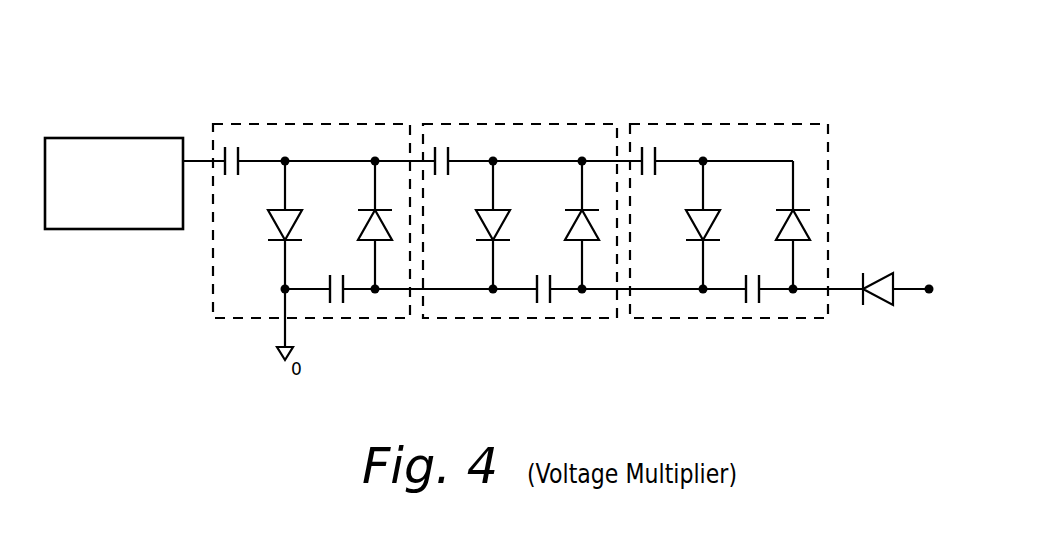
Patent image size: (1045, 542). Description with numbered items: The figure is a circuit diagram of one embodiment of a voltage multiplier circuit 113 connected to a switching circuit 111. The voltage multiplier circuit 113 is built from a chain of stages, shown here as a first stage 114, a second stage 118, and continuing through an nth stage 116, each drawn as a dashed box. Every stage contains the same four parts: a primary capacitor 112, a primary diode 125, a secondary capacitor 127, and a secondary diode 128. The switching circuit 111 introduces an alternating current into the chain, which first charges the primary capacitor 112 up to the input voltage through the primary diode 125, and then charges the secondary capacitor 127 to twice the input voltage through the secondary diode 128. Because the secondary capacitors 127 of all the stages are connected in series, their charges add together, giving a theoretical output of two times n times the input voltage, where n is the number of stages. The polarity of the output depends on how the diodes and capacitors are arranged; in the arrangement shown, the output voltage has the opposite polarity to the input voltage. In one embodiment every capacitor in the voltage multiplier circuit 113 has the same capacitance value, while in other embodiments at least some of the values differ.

The switching circuit 111 is at (117, 137).
The primary capacitor 112 is at (230, 143).
The voltage multiplier circuit 113 is at (520, 164).
The first stage 114 is at (305, 123).
The nth stage 116 is at (765, 123).
The second stage 118 is at (513, 123).
The primary diode 125 is at (268, 233).
The secondary capacitor 127 is at (333, 312).
The secondary diode 128 is at (393, 233).